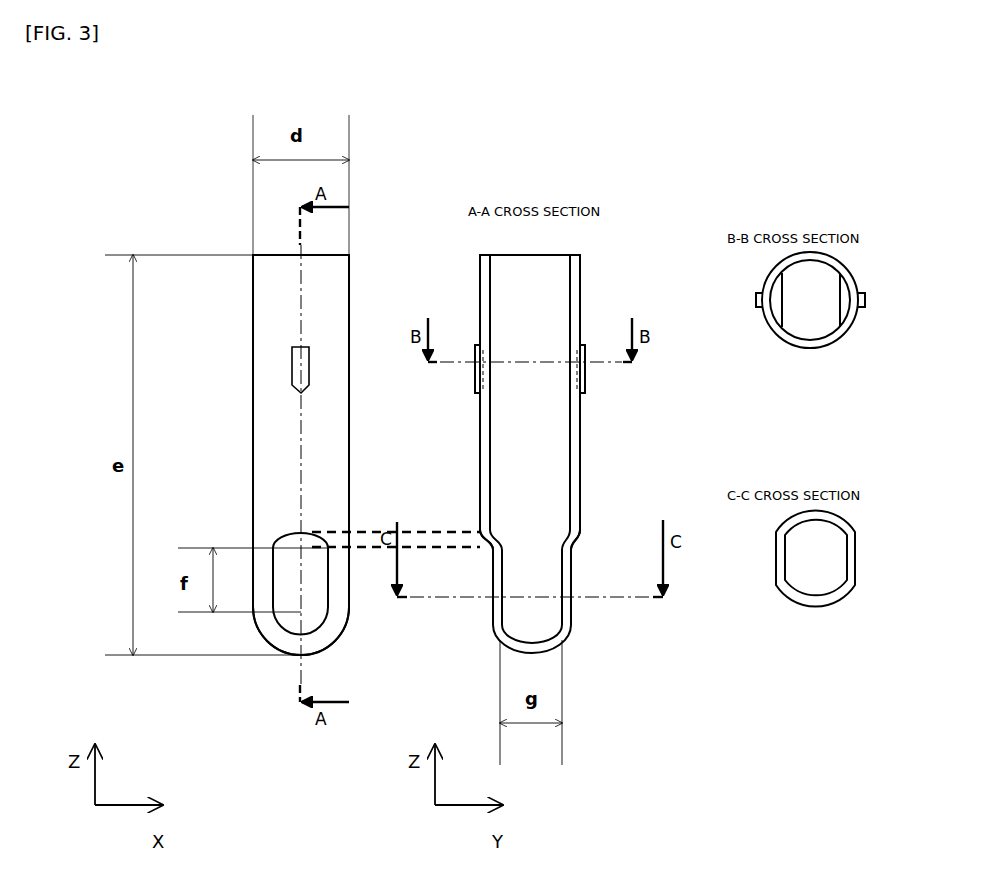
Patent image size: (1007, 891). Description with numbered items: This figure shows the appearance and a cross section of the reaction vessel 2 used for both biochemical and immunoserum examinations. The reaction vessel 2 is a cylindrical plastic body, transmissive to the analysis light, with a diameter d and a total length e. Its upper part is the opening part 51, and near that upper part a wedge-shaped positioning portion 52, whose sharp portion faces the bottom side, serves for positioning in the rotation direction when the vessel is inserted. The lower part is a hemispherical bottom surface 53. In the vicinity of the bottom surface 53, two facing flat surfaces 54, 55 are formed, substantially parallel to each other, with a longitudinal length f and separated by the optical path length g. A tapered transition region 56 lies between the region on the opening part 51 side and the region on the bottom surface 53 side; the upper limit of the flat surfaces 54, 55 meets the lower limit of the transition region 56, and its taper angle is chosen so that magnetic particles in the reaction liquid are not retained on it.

The reaction vessel 2 is at (275, 440).
The opening part 51 is at (327, 252).
The positioning portion 52 is at (302, 347).
The bottom surface 53 is at (275, 648).
The flat surface 54 is at (315, 580).
The flat surface 55 is at (572, 605).
The transition region 56 is at (495, 535).